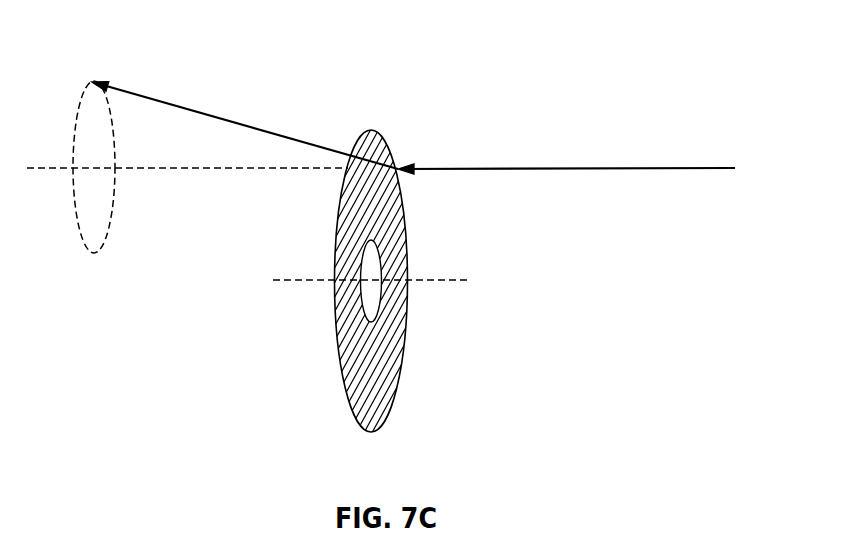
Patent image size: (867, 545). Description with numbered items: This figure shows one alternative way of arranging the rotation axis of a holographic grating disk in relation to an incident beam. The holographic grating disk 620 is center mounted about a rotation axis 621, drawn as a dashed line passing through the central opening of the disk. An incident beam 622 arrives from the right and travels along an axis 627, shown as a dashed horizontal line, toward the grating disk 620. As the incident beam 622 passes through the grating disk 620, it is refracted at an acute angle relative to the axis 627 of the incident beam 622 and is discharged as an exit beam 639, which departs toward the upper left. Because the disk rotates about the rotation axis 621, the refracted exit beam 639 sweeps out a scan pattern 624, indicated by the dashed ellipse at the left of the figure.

The holographic grating disk 620 is at (392, 473).
The rotation axis 621 is at (450, 280).
The incident beam 622 is at (672, 168).
The scan pattern 624 is at (108, 223).
The axis of the incident beam 627 is at (238, 170).
The exit beam 639 is at (197, 110).